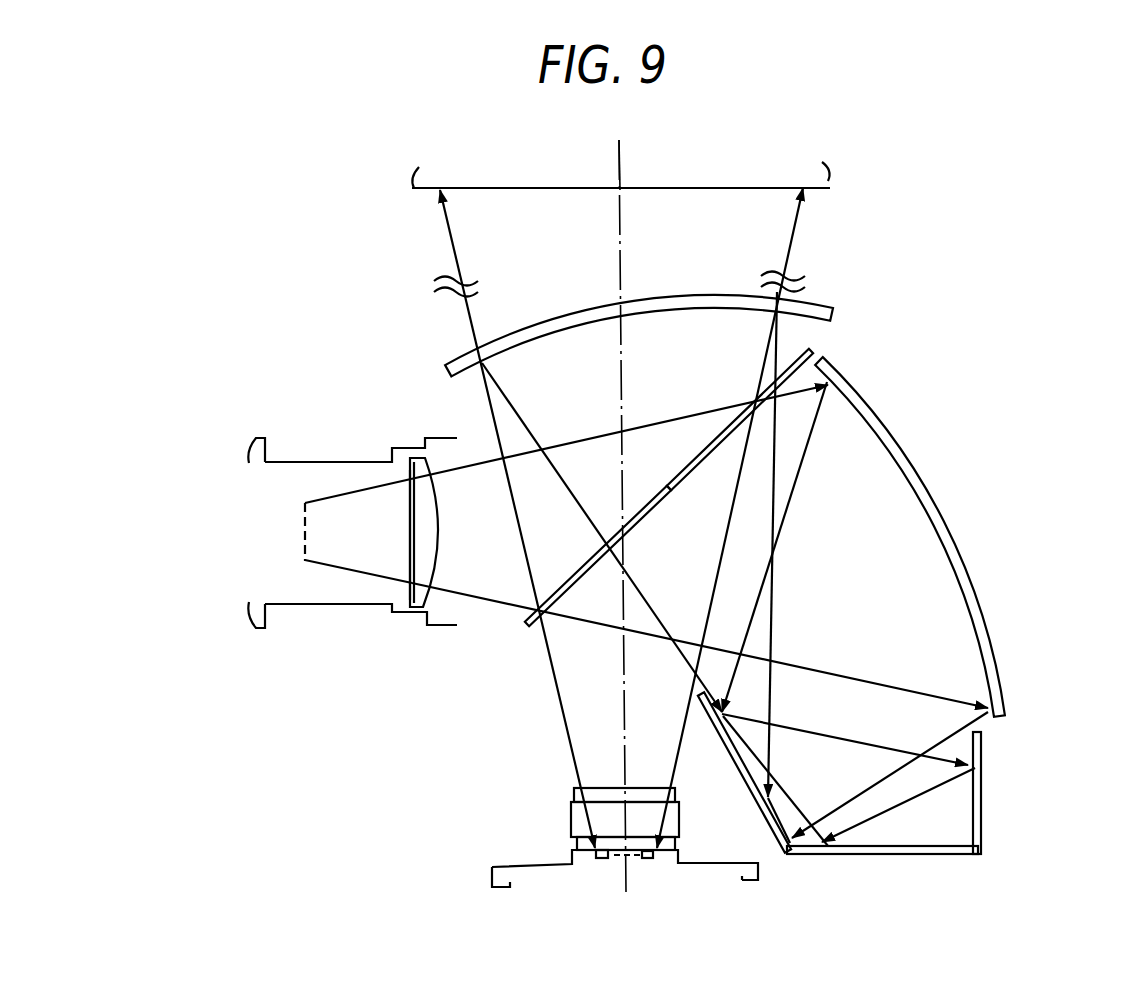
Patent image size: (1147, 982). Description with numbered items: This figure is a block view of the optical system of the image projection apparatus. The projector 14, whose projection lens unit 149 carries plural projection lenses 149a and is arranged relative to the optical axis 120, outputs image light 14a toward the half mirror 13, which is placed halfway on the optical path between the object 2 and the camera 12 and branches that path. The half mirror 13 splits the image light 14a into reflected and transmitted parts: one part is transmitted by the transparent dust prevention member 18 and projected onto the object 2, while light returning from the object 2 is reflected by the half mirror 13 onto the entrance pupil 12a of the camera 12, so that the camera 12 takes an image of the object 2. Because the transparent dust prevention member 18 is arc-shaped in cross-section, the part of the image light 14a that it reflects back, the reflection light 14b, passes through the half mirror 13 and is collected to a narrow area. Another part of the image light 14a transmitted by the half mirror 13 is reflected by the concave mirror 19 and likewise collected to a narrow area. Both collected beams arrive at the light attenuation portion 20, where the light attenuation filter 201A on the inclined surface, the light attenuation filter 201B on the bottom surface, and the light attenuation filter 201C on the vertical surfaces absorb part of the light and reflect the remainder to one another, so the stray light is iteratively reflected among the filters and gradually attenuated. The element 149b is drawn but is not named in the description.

The object 2 is at (835, 177).
The optical axis 120 is at (616, 151).
The camera 12 is at (572, 876).
The entrance pupil 12a is at (613, 858).
The half mirror 13 is at (525, 628).
The projector 14 is at (315, 519).
The image light 14a is at (452, 472).
The reflection light 14b is at (777, 352).
The projection lens unit 149 is at (315, 462).
The projection lens 149a is at (422, 598).
The light source 149b is at (300, 537).
The transparent dust prevention member 18 is at (820, 313).
The concave mirror 19 is at (938, 511).
The light attenuation portion 20 is at (912, 825).
The light attenuation filter 201A is at (779, 852).
The light attenuation filter 201B is at (888, 858).
The light attenuation filter 201C is at (982, 800).